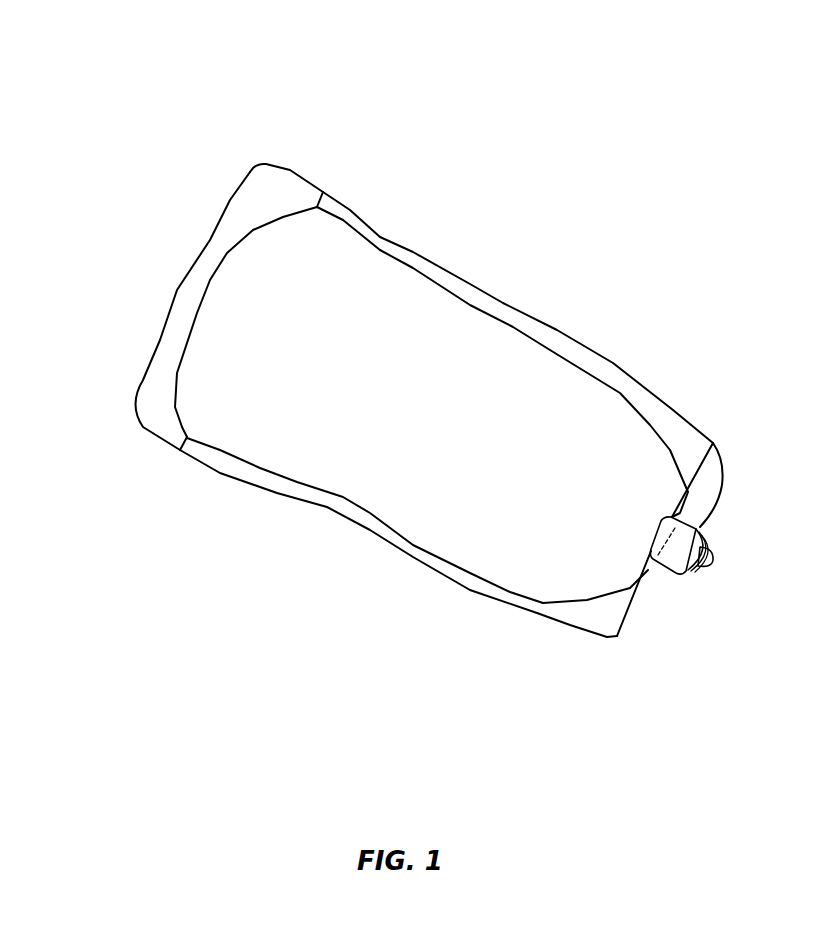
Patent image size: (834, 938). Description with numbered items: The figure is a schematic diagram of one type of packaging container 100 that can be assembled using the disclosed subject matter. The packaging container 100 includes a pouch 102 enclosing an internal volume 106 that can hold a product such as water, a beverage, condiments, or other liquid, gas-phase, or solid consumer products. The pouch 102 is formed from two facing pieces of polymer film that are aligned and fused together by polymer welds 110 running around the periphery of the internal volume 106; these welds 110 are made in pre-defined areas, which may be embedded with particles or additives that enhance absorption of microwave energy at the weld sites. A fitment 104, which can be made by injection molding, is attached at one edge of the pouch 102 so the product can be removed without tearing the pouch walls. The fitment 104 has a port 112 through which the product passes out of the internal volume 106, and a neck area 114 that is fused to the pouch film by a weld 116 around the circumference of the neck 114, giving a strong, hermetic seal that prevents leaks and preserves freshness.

The packaging container 100 is at (653, 126).
The pouch 102 is at (82, 487).
The fitment 104 is at (731, 590).
The internal volume 106 is at (225, 322).
The polymer welds 110 is at (683, 489).
The port 112 is at (716, 579).
The neck area 114 is at (674, 590).
The weld 116 is at (683, 529).